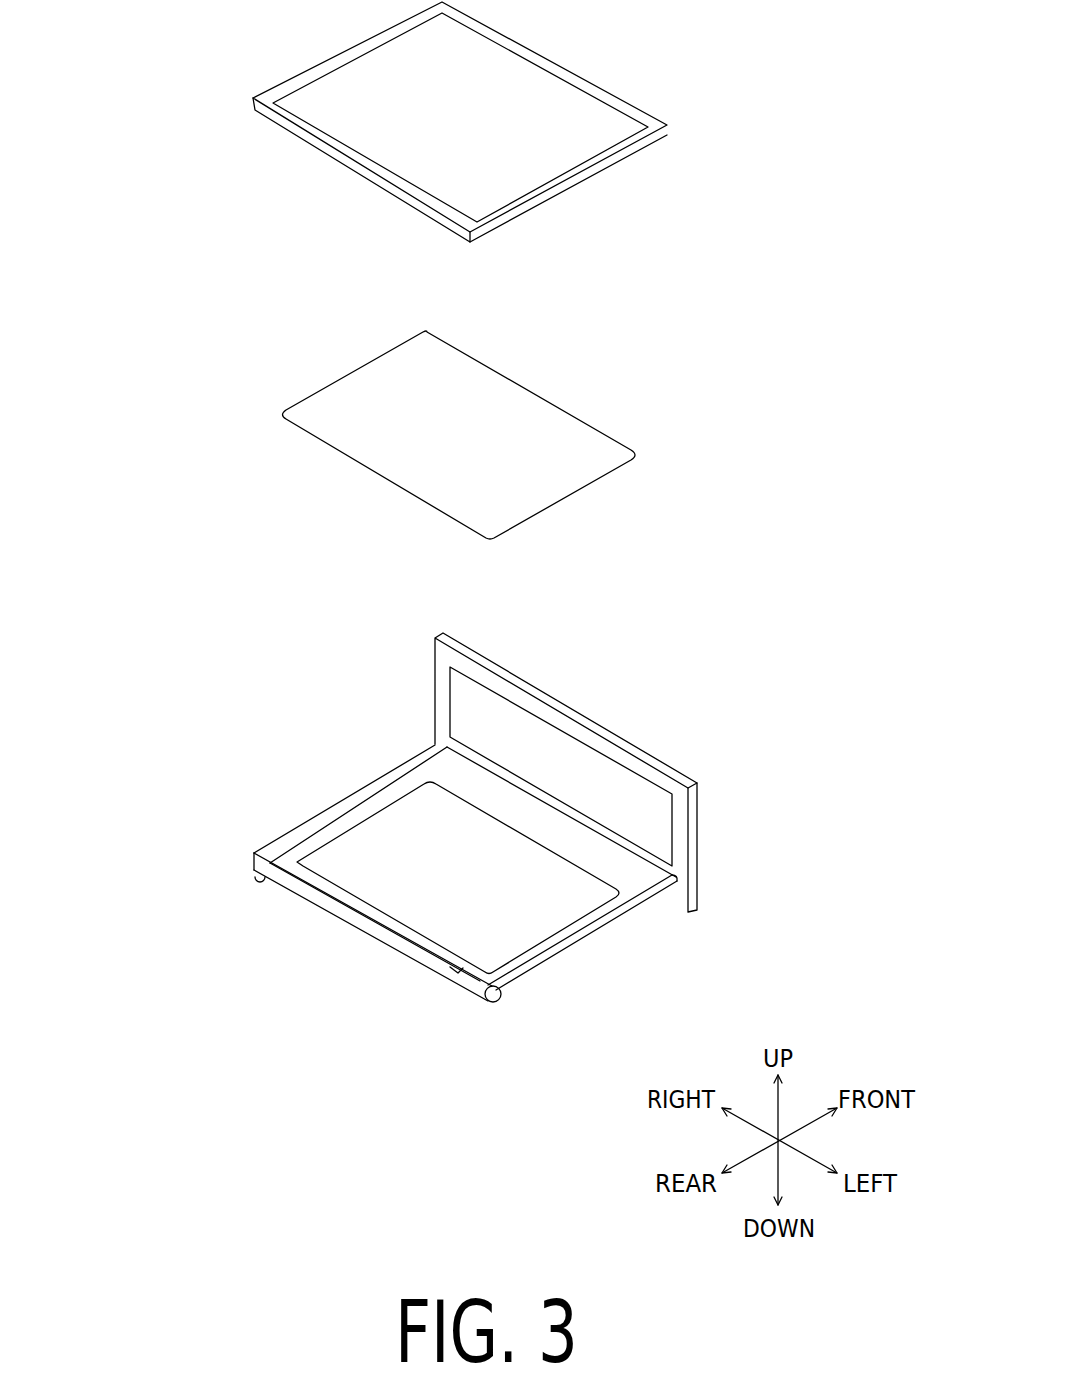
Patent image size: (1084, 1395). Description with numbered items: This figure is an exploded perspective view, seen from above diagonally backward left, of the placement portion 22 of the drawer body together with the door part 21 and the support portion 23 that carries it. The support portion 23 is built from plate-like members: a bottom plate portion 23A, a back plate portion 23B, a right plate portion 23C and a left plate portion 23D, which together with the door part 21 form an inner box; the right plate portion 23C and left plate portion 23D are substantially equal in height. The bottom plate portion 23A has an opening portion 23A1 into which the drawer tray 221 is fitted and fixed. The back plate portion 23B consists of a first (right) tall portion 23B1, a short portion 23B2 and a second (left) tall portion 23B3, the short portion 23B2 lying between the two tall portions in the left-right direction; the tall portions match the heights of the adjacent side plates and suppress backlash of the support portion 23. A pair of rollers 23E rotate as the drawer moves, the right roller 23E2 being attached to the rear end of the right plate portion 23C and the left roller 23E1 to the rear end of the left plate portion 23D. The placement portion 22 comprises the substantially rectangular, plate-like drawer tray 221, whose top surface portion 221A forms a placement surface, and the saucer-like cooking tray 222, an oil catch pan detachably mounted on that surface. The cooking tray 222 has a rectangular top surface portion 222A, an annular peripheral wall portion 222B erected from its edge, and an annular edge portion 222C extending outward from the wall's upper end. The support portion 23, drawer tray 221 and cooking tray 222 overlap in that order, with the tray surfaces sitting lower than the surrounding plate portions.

The door part 21 is at (698, 808).
The placement portion 22 is at (392, 270).
The drawer tray 221 is at (442, 420).
The top surface portion 221A is at (542, 418).
The cooking tray 222 is at (364, 122).
The top surface portion 222A is at (408, 83).
The annular peripheral wall portion 222B is at (328, 153).
The annular edge portion 222C is at (397, 182).
The support portion 23 is at (457, 895).
The bottom plate portion 23A is at (537, 878).
The opening portion 23A1 is at (628, 892).
The back plate portion 23B is at (314, 970).
The first tall portion 23B1 is at (277, 877).
The short portion 23B2 is at (353, 917).
The second tall portion 23B3 is at (458, 983).
The right plate portion 23C is at (305, 832).
The left plate portion 23D is at (543, 957).
The pair of rollers 23E is at (377, 978).
The left roller 23E1 is at (500, 1003).
The right roller 23E2 is at (258, 881).